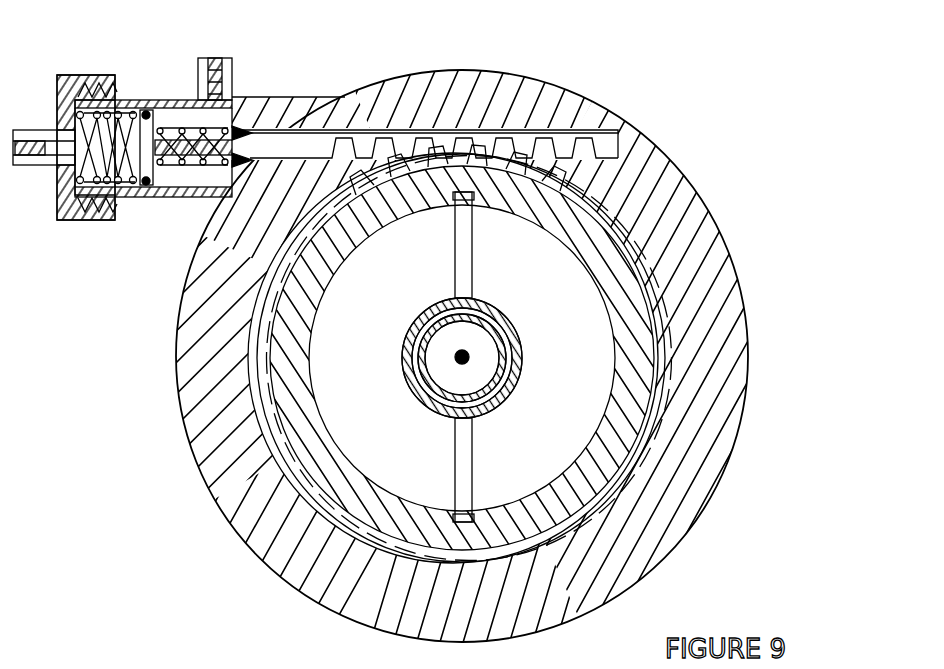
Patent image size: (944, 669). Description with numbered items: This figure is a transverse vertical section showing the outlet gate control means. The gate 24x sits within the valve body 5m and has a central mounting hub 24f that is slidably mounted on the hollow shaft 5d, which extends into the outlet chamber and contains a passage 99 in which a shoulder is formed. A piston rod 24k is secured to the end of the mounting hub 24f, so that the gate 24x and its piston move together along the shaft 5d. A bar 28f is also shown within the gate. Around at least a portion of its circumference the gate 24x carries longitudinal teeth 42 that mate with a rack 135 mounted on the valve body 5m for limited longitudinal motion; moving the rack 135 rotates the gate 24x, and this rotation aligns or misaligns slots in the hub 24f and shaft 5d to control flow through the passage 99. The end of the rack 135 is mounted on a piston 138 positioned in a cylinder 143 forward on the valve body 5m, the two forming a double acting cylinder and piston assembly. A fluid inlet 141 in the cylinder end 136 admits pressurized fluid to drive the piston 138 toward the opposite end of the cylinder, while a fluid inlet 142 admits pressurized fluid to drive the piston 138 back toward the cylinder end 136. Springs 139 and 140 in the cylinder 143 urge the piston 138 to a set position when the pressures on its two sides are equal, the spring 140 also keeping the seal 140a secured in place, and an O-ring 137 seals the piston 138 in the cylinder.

The valve body 5m is at (540, 84).
The gate 24x is at (668, 306).
The longitudinal teeth 42 is at (578, 190).
The bar 28f is at (463, 447).
The hollow shaft 5d is at (423, 330).
The mounting hub 24f is at (472, 300).
The piston rod 24k is at (470, 368).
The passage 99 is at (478, 358).
The rack 135 is at (600, 134).
The cylinder end 136 is at (67, 220).
The cylinder 143 is at (148, 190).
The O-ring 137 is at (150, 195).
The fluid inlet 141 is at (16, 131).
The spring 139 is at (77, 172).
The piston 138 is at (143, 112).
The spring 140 is at (231, 100).
The seal 140a is at (248, 126).
The fluid inlet 142 is at (226, 60).